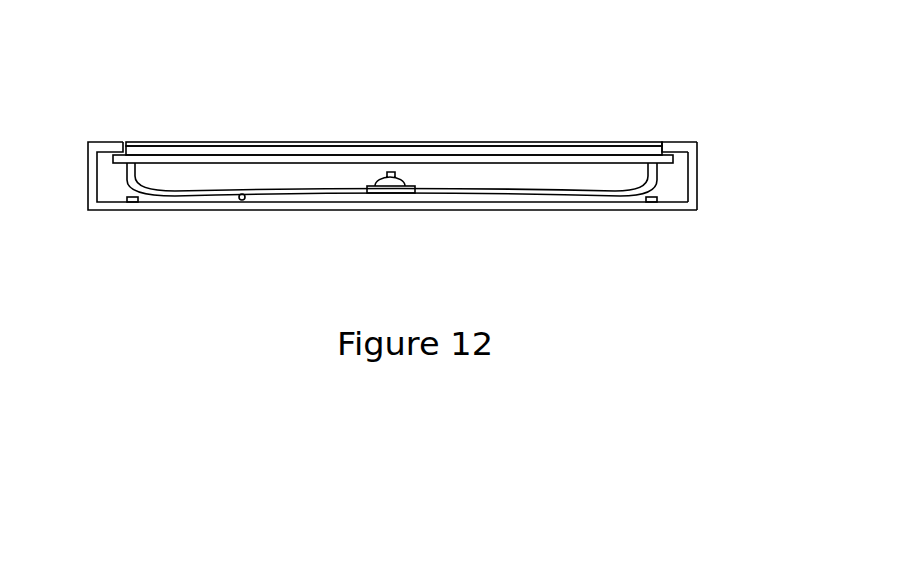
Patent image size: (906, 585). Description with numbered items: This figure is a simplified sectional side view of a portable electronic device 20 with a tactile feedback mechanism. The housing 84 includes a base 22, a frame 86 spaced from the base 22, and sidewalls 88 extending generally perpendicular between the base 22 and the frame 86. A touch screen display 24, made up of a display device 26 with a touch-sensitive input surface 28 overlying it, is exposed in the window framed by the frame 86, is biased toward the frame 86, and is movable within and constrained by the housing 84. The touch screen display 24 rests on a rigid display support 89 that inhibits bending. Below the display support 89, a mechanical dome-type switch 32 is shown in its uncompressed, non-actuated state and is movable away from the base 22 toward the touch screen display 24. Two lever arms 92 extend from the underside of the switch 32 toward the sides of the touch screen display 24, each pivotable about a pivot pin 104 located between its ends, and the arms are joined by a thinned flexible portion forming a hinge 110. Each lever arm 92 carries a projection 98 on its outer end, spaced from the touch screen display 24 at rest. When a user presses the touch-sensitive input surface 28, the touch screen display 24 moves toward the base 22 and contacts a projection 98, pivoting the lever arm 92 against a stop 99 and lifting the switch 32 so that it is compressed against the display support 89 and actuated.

The portable electronic device 20 is at (598, 74).
The base 22 is at (583, 203).
The touch screen display 24 is at (164, 136).
The display device 26 is at (430, 155).
The touch-sensitive input surface 28 is at (512, 145).
The switch 32 is at (390, 180).
The housing 84 is at (697, 210).
The frame 86 is at (668, 138).
The sidewalls 88 is at (697, 166).
The display support 89 is at (228, 160).
The lever arms 92 is at (165, 196).
The projection 98 is at (128, 171).
The stop 99 is at (132, 204).
The pivot pin 104 is at (243, 201).
The hinge 110 is at (390, 197).